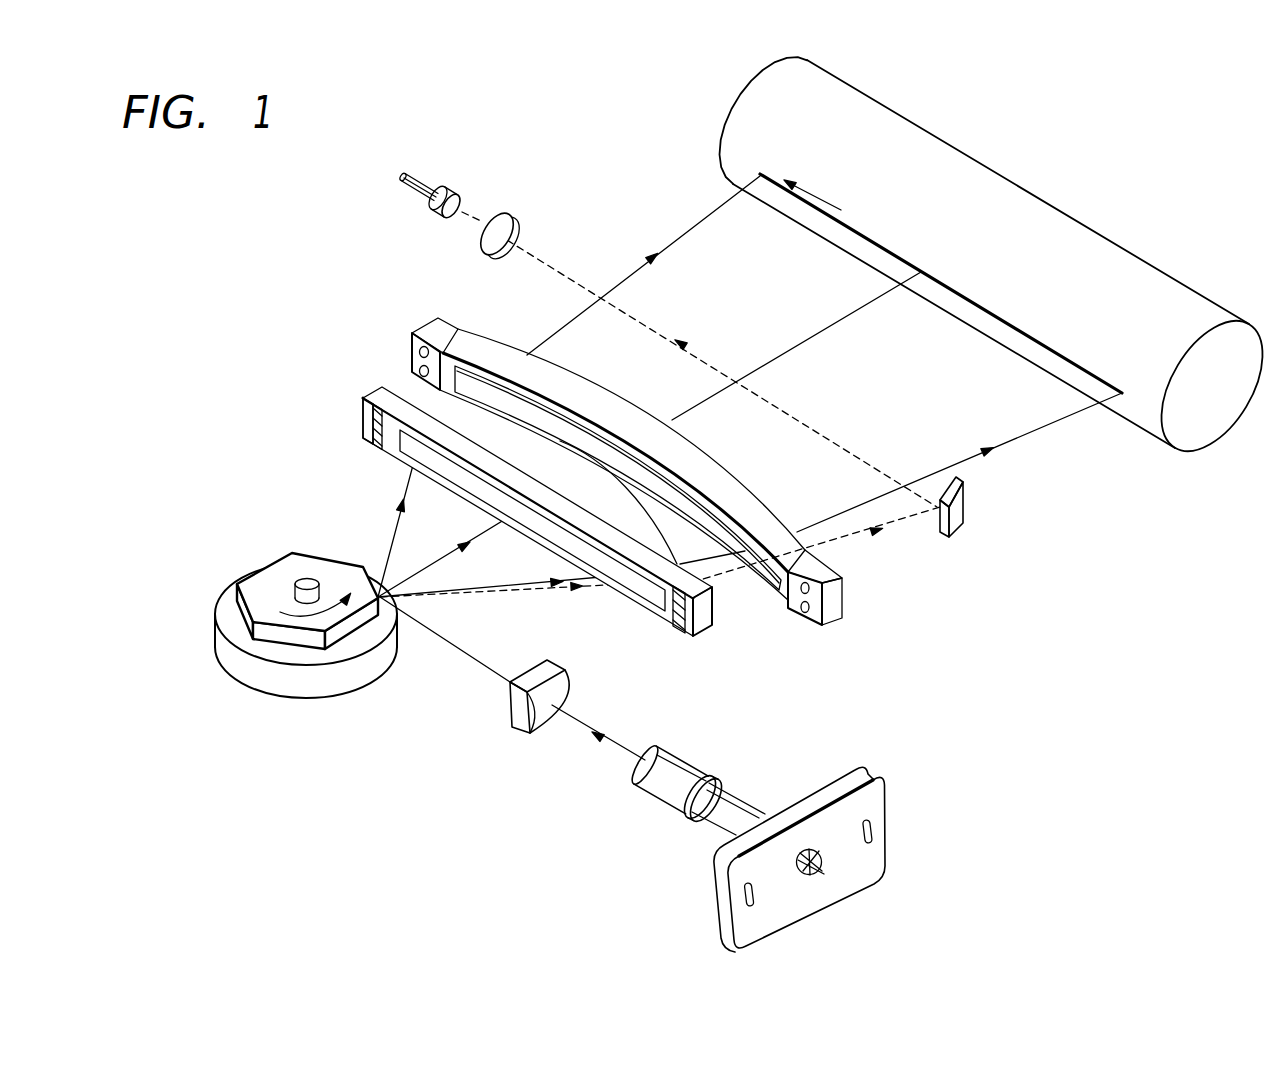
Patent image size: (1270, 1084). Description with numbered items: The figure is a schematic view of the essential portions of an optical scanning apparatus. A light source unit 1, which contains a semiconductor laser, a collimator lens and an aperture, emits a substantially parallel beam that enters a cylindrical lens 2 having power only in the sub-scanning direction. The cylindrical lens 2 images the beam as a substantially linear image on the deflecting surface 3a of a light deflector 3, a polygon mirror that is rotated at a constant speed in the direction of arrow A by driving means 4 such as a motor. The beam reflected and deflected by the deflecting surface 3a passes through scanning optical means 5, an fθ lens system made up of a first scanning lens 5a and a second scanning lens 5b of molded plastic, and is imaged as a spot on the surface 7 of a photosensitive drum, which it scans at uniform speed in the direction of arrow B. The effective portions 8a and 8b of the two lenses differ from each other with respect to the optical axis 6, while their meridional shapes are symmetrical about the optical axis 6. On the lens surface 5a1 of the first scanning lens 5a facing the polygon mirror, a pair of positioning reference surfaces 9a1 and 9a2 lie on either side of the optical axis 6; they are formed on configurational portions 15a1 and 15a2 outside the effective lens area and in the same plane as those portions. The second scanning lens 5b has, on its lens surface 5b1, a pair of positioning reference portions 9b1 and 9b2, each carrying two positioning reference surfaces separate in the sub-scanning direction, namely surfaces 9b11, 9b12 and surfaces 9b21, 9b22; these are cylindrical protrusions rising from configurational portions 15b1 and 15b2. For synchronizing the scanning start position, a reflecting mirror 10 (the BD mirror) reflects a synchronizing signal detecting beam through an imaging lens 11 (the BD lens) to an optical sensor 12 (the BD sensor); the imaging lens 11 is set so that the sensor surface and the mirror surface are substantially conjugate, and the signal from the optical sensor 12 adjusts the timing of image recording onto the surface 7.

The light source unit 1 is at (818, 866).
The cylindrical lens 2 is at (513, 712).
The light deflector 3 is at (300, 573).
The deflecting surface 3a is at (377, 582).
The driving means 4 is at (280, 683).
The scanning optical means 5 is at (236, 240).
The first scanning lens 5a is at (363, 392).
The lens surface 5a1 is at (458, 494).
The second scanning lens 5b is at (410, 328).
The lens surface 5b1 is at (593, 438).
The optical axis 6 is at (845, 321).
The surface of photosensitive drum 7 is at (961, 170).
The effective portion 8a is at (572, 553).
The effective portion 8b is at (470, 380).
The positioning reference surface 9a1 is at (702, 630).
The positioning reference surface 9a2 is at (362, 400).
The positioning reference portion 9b1 is at (928, 612).
The positioning reference surface 9b11 is at (812, 592).
The positioning reference surface 9b12 is at (815, 612).
The positioning reference portion 9b2 is at (500, 274).
The positioning reference surface 9b21 is at (424, 346).
The positioning reference surface 9b22 is at (430, 366).
The reflecting mirror 10 is at (963, 507).
The imaging lens 11 is at (521, 212).
The optical sensor 12 is at (453, 180).
The configurational portion 15a1 is at (672, 615).
The configurational portion 15a2 is at (373, 446).
The configurational portion 15b1 is at (797, 605).
The configurational portion 15b2 is at (412, 353).
The rotation direction arrow A is at (325, 615).
The main scanning direction arrow B is at (821, 198).